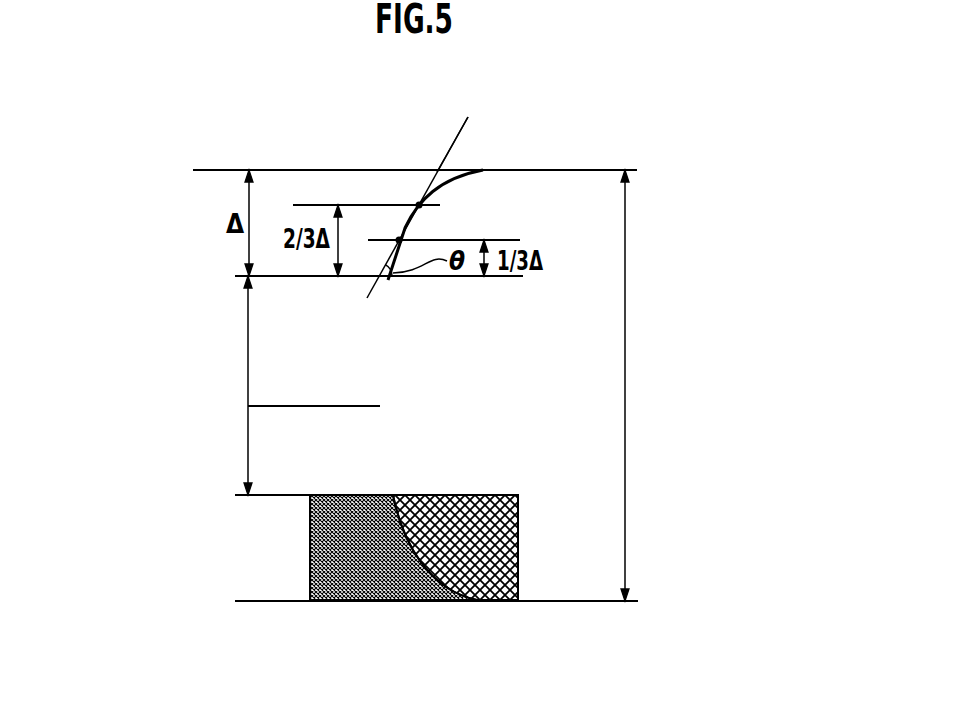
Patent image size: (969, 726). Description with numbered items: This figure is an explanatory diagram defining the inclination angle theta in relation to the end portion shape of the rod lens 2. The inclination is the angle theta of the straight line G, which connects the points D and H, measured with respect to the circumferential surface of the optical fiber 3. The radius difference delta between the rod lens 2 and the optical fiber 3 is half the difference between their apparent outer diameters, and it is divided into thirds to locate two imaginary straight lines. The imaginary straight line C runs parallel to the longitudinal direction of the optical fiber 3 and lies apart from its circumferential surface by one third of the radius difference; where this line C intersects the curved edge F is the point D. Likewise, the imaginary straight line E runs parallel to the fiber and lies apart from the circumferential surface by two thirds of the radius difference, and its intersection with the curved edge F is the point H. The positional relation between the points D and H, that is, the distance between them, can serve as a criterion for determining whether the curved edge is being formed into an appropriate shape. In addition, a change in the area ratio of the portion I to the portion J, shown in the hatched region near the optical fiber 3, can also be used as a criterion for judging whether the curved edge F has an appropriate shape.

The rod lens 2 is at (675, 257).
The optical fiber 3 is at (183, 303).
The imaginary straight line C is at (440, 240).
The point D is at (399, 240).
The imaginary straight line E is at (310, 203).
The curved edge F is at (437, 172).
The straight line G is at (457, 142).
The point H is at (419, 205).
The portion I is at (383, 602).
The portion J is at (503, 603).